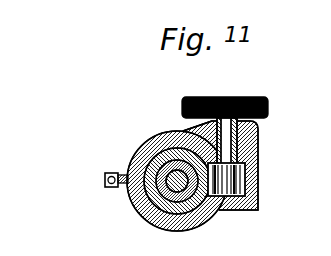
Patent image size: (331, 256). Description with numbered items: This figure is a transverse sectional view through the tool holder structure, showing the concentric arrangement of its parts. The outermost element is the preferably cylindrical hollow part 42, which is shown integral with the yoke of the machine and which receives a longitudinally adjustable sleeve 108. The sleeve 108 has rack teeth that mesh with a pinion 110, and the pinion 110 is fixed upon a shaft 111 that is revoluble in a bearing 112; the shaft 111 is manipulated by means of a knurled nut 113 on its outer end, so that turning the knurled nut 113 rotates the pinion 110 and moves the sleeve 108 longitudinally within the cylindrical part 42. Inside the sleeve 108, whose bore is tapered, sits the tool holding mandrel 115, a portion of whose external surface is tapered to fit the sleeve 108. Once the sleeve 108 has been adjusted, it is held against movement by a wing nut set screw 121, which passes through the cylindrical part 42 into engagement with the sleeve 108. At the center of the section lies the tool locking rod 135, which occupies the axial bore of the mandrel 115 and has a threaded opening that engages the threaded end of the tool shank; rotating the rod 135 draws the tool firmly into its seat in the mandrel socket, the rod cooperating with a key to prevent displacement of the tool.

The cylindrical hollow part 42 is at (160, 218).
The sleeve 108 is at (198, 207).
The pinion 110 is at (237, 170).
The shaft 111 is at (227, 146).
The bearing 112 is at (214, 138).
The knurled nut 113 is at (262, 96).
The tool holding mandrel 115 is at (134, 195).
The wing nut set screw 121 is at (111, 173).
The tool locking rod 135 is at (162, 160).